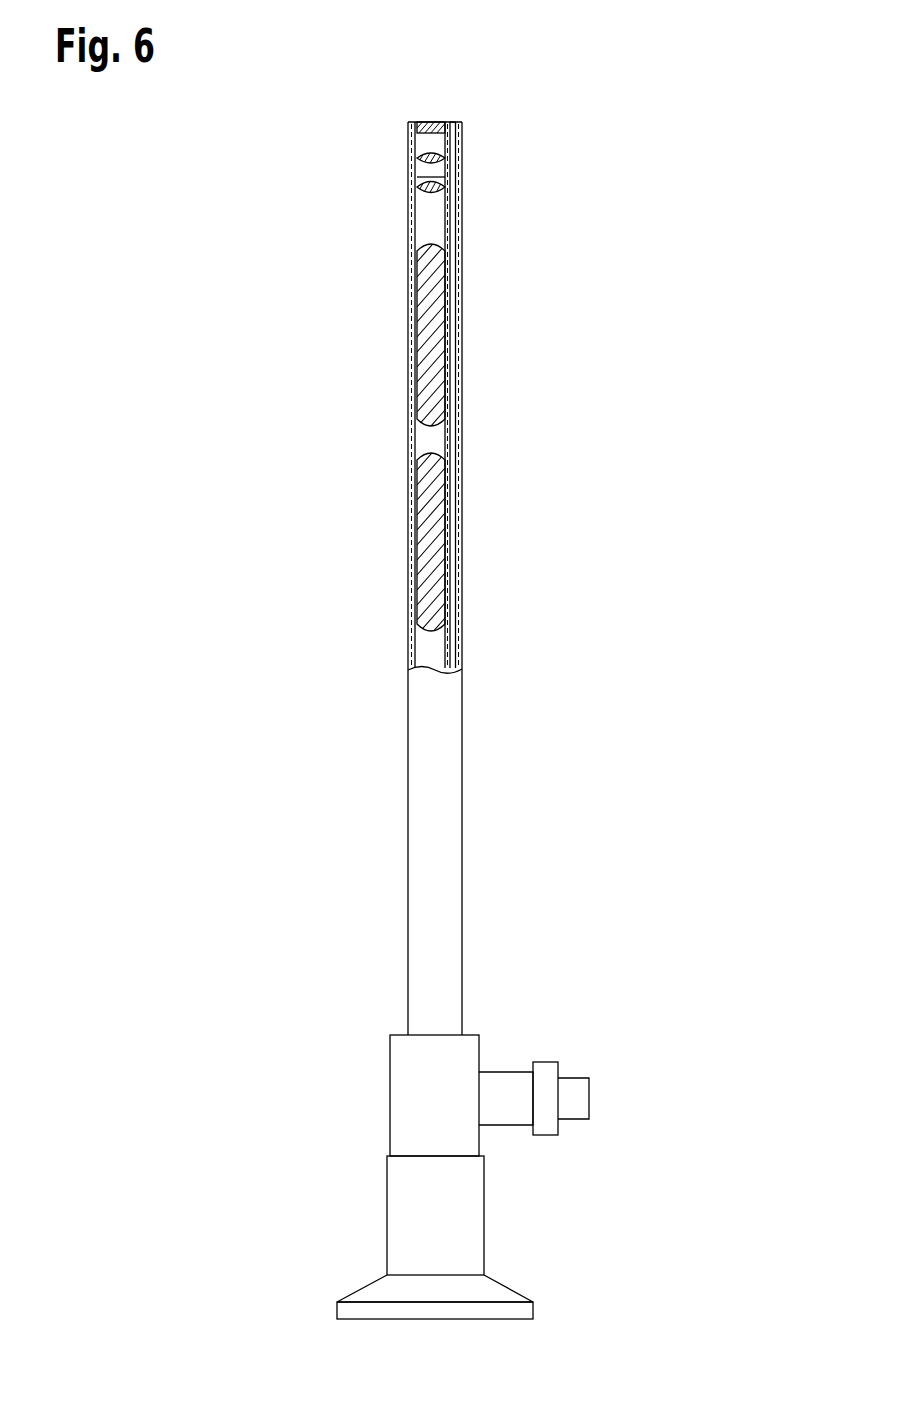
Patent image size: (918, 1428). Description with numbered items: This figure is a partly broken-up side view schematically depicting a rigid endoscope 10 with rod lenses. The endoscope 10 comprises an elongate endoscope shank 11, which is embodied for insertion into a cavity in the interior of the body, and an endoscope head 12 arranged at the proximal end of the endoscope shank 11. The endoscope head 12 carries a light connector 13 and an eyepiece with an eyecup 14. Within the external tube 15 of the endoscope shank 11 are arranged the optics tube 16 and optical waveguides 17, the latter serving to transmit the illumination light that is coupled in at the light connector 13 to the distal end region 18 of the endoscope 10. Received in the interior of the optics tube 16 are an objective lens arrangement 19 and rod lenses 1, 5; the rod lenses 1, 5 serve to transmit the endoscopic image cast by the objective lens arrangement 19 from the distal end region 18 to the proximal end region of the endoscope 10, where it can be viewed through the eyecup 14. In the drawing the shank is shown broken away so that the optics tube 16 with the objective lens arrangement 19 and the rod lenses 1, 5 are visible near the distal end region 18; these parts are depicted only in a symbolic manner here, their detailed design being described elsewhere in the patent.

The rod lens 1 is at (428, 344).
The rod lens 5 is at (428, 567).
The endoscope 10 is at (185, 683).
The endoscope shank 11 is at (375, 755).
The endoscope head 12 is at (345, 1208).
The light connector 13 is at (603, 1053).
The eyecup 14 is at (483, 1291).
The external tube 15 is at (462, 222).
The optics tube 16 is at (415, 220).
The optical waveguides 17 is at (453, 122).
The distal end region 18 is at (545, 122).
The objective lens arrangement 19 is at (403, 163).